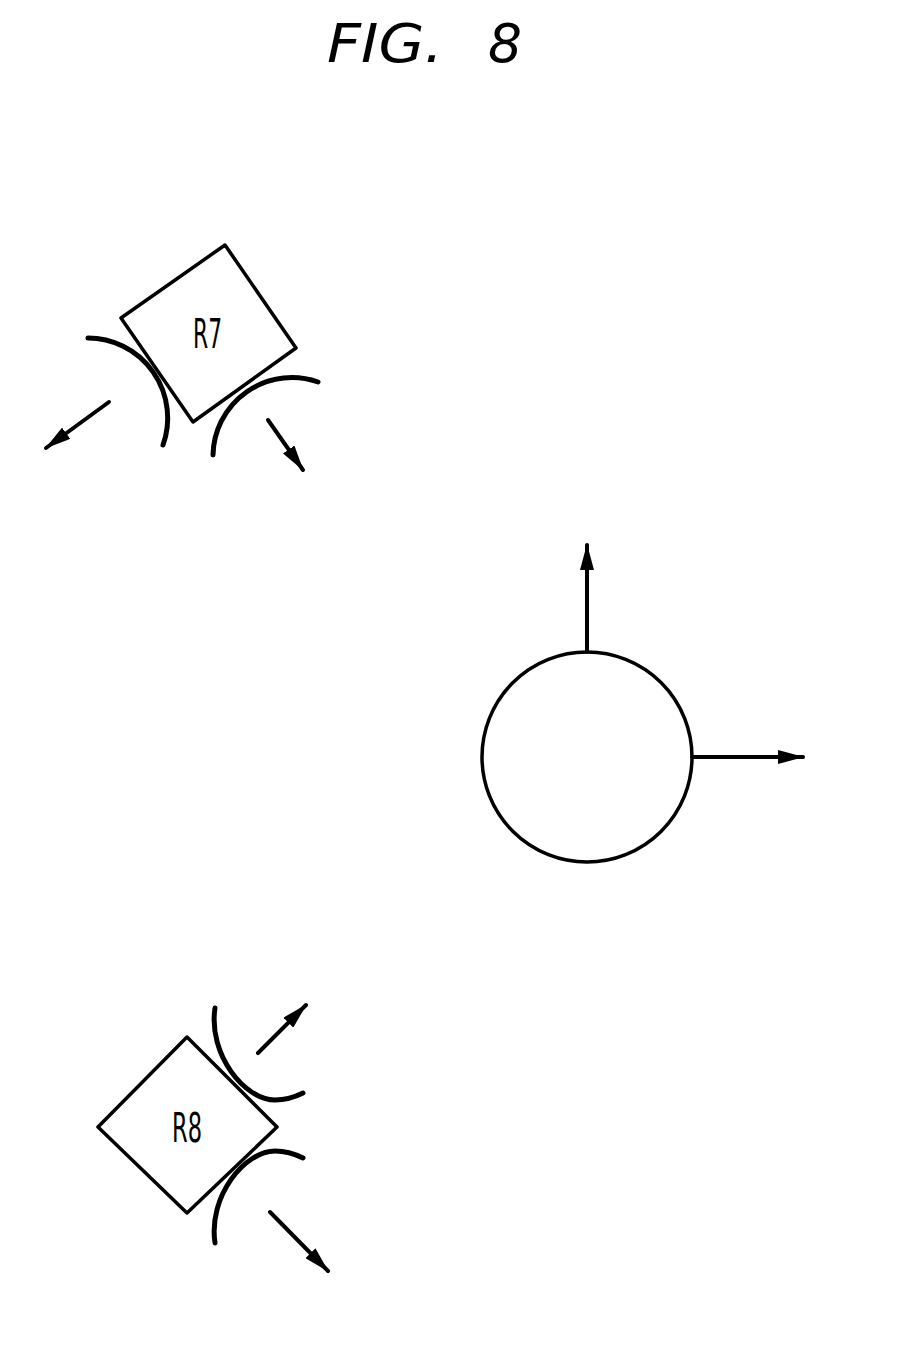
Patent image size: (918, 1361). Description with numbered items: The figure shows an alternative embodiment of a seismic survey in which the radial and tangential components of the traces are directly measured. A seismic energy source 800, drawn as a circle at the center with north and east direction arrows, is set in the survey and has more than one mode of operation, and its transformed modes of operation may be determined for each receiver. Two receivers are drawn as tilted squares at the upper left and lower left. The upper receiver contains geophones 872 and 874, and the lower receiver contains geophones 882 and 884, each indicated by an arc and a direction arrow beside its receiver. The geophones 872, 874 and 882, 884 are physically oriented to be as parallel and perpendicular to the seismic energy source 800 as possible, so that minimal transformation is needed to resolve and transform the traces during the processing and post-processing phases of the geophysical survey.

The seismic energy source 800 is at (482, 757).
The geophone 872 is at (318, 381).
The geophone 874 is at (88, 340).
The geophone 882 is at (212, 1026).
The geophone 884 is at (213, 1230).